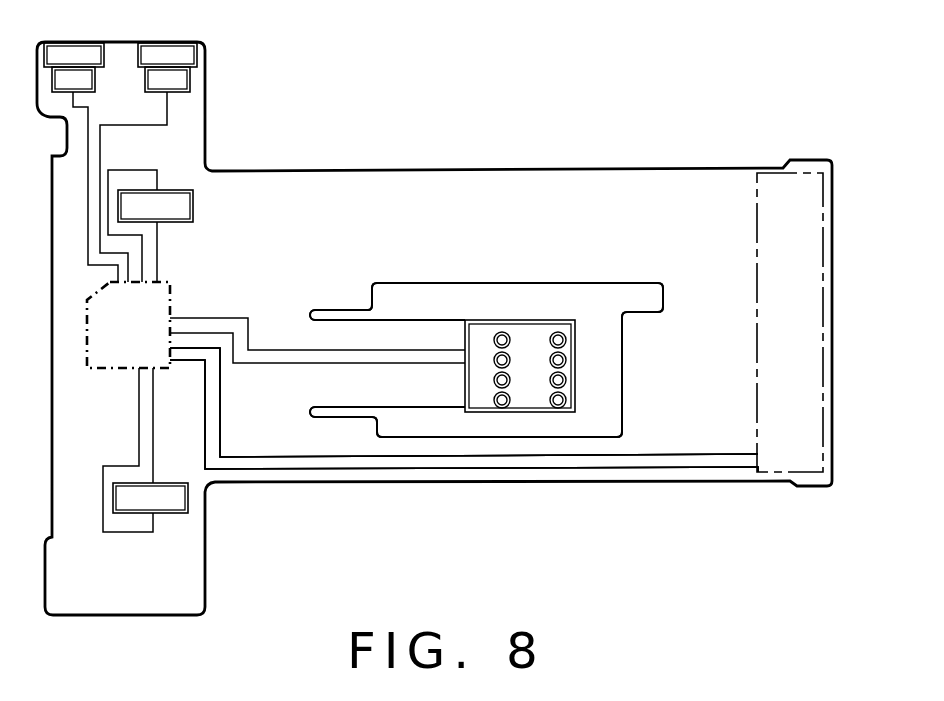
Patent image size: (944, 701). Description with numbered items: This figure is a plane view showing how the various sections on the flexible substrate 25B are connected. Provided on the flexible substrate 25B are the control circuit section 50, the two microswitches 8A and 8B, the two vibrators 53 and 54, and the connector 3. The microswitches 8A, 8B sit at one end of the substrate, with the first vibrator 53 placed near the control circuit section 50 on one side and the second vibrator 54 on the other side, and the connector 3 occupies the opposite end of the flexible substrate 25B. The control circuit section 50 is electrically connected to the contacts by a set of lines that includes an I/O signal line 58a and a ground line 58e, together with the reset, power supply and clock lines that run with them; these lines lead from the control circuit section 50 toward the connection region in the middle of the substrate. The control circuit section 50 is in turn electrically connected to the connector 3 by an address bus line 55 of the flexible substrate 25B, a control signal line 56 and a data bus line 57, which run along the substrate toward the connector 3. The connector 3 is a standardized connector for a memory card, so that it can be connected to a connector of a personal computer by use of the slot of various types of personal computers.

The flexible substrate 25B is at (520, 186).
The microswitch 8A is at (72, 52).
The microswitch 8B is at (170, 52).
The vibrator 53 is at (182, 200).
The control circuit section 50 is at (160, 296).
The vibrator 54 is at (175, 500).
The address bus line 55 is at (546, 462).
The control signal line 56 is at (546, 462).
The data bus line 57 is at (546, 462).
The I/O signal line 58a is at (283, 357).
The ground line 58e is at (283, 357).
The connector 3 is at (807, 320).